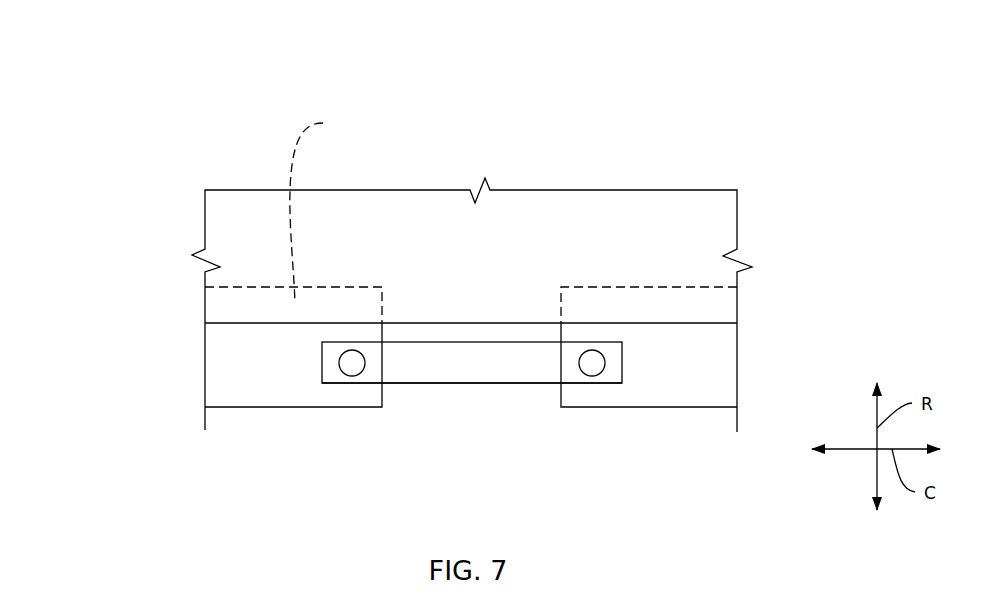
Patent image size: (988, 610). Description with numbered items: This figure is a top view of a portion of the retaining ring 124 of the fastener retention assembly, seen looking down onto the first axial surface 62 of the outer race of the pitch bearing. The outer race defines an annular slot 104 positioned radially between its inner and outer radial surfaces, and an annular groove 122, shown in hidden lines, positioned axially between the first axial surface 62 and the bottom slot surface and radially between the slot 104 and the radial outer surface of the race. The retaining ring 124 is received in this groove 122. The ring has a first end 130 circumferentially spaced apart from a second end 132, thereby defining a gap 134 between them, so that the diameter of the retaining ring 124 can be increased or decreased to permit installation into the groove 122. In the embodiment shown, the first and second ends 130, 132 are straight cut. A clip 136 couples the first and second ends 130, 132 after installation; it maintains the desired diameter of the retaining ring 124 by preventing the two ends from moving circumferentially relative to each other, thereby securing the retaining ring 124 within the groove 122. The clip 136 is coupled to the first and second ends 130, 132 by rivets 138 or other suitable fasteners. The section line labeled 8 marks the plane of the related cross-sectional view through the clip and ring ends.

The retaining ring 124 is at (108, 112).
The annular groove 122 is at (328, 208).
The rivets 138 is at (352, 363).
The first axial surface 62 is at (643, 235).
The first end 130 is at (306, 437).
The second end 132 is at (625, 443).
The gap 134 is at (450, 422).
The clip 136 is at (513, 373).
The annular slot 104 is at (466, 418).
The section line 8- 8 is at (162, 362).